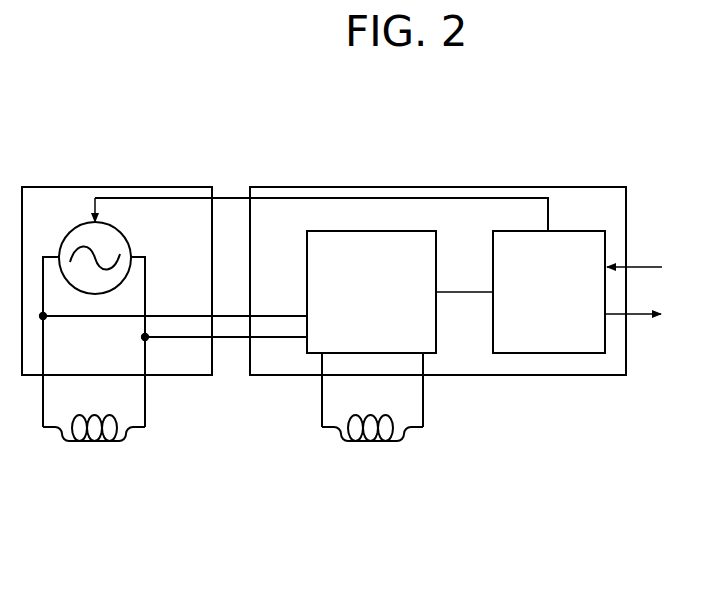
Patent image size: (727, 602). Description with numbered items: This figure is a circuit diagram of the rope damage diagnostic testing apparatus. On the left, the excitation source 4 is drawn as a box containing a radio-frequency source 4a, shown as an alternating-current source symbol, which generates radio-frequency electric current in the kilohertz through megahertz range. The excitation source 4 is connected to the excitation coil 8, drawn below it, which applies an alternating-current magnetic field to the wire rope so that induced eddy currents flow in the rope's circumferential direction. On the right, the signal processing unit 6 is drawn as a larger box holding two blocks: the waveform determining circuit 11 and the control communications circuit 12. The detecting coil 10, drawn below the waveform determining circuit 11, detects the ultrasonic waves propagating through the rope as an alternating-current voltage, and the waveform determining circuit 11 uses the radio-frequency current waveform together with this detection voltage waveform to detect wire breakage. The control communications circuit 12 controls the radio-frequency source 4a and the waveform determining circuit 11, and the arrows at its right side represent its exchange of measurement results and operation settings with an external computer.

The excitation source 4 is at (48, 187).
The radio-frequency source 4a is at (116, 228).
The signal processing unit 6 is at (315, 187).
The excitation coil 8 is at (68, 441).
The detecting coil 10 is at (346, 441).
The waveform determining circuit 11 is at (385, 231).
The control communications circuit 12 is at (588, 231).